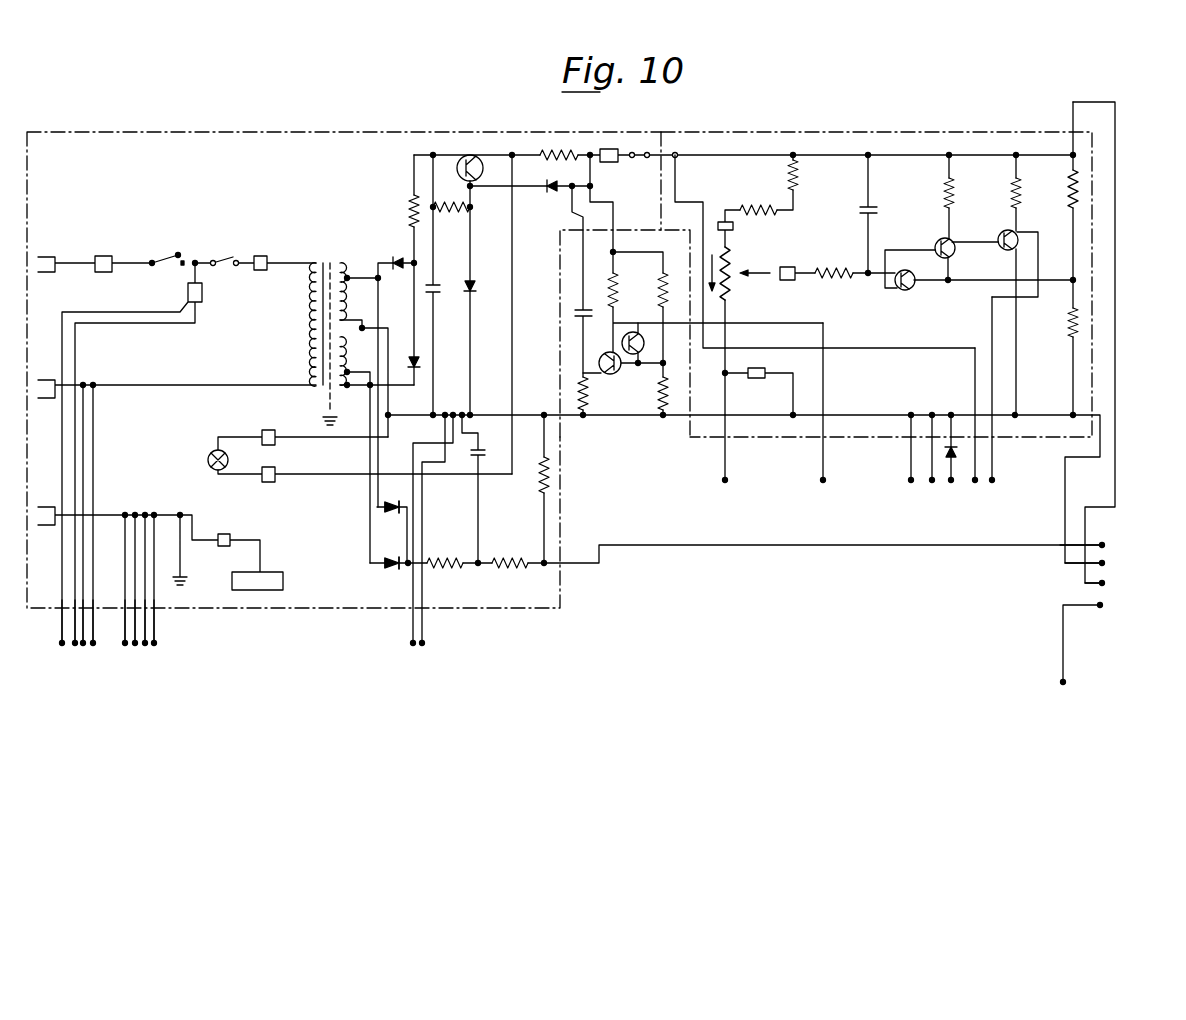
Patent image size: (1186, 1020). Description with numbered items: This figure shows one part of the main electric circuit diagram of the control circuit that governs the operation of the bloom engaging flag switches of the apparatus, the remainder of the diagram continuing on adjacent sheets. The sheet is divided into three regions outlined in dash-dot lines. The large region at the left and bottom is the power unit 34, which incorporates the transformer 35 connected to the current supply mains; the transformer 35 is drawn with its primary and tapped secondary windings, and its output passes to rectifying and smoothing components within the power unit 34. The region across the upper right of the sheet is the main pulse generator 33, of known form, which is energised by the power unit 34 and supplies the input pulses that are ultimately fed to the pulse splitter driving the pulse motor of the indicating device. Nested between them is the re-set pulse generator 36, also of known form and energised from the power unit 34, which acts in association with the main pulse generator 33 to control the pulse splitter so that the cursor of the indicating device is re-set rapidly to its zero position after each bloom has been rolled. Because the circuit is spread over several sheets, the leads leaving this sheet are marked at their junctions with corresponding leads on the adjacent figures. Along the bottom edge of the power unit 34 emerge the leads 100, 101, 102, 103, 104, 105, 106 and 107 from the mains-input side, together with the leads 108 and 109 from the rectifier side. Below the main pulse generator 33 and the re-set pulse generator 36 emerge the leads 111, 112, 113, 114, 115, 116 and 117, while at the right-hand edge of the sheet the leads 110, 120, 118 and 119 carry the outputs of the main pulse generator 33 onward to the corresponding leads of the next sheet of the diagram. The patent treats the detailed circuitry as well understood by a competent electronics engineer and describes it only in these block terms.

The main pulse generator 33 is at (983, 132).
The power unit 34 is at (358, 132).
The transformer 35 is at (338, 262).
The re-set pulse generator 36 is at (640, 228).
The lead 100 is at (62, 643).
The lead 101 is at (75, 643).
The lead 102 is at (83, 643).
The lead 103 is at (93, 643).
The lead 104 is at (125, 643).
The lead 105 is at (135, 643).
The lead 106 is at (145, 643).
The lead 107 is at (154, 643).
The lead 108 is at (413, 643).
The lead 109 is at (422, 643).
The lead 110 is at (1102, 545).
The lead 111 is at (725, 480).
The lead 112 is at (823, 480).
The lead 113 is at (911, 480).
The lead 114 is at (932, 480).
The lead 115 is at (951, 480).
The lead 116 is at (975, 480).
The lead 117 is at (992, 480).
The lead 118 is at (1102, 583).
The lead 119 is at (1113, 678).
The lead 120 is at (1102, 563).